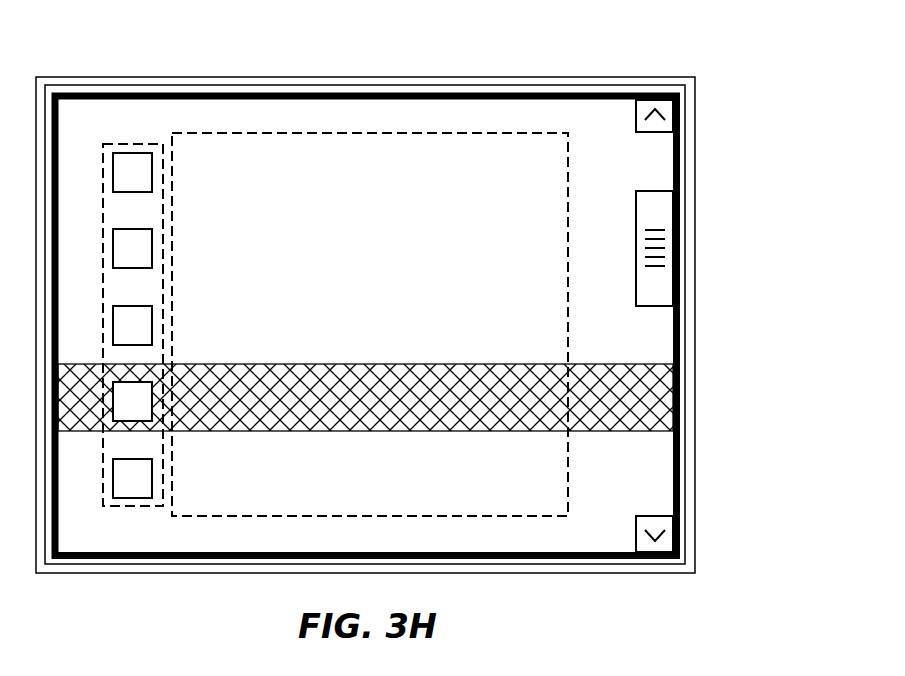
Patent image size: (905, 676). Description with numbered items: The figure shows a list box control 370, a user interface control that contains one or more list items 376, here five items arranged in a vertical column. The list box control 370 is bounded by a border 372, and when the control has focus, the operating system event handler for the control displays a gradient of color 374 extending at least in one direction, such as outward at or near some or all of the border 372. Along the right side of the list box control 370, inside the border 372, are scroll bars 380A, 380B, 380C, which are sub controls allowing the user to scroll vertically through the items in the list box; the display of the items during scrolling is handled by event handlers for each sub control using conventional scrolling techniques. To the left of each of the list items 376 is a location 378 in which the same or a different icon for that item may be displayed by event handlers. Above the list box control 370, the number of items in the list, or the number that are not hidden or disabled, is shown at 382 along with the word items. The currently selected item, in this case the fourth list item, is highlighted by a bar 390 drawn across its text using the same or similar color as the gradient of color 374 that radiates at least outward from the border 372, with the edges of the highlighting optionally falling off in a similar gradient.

The list box control 370 is at (266, 40).
The border 372 is at (677, 172).
The gradient of color 374 is at (717, 331).
The list items 376 is at (570, 325).
The icon locations 378 is at (103, 506).
The scroll bar 380A is at (668, 220).
The scroll bar 380B is at (668, 112).
The scroll bar 380C is at (668, 530).
The number of items 382 is at (676, 58).
The bar 390 is at (578, 433).